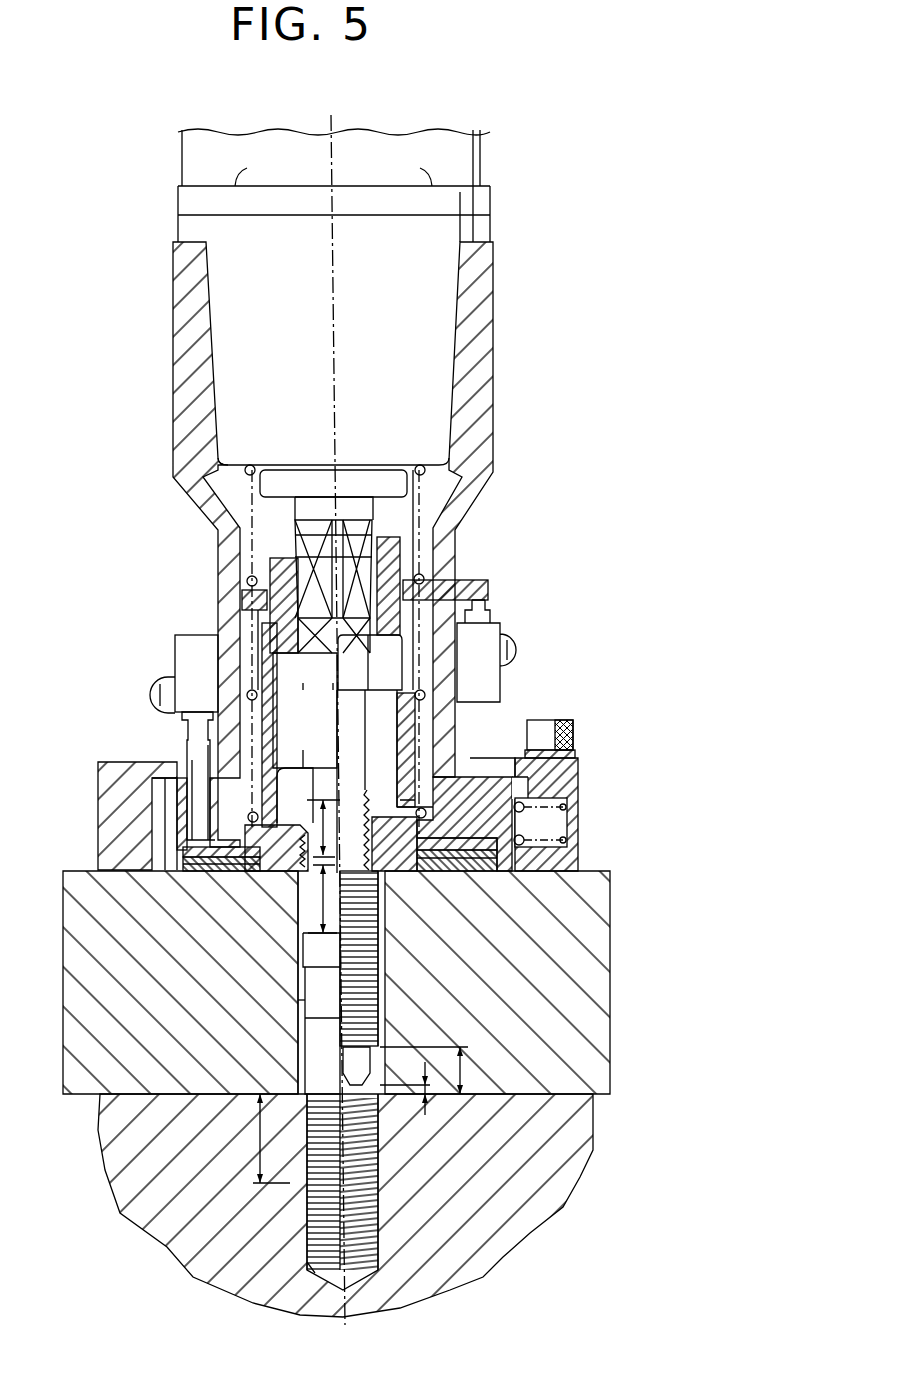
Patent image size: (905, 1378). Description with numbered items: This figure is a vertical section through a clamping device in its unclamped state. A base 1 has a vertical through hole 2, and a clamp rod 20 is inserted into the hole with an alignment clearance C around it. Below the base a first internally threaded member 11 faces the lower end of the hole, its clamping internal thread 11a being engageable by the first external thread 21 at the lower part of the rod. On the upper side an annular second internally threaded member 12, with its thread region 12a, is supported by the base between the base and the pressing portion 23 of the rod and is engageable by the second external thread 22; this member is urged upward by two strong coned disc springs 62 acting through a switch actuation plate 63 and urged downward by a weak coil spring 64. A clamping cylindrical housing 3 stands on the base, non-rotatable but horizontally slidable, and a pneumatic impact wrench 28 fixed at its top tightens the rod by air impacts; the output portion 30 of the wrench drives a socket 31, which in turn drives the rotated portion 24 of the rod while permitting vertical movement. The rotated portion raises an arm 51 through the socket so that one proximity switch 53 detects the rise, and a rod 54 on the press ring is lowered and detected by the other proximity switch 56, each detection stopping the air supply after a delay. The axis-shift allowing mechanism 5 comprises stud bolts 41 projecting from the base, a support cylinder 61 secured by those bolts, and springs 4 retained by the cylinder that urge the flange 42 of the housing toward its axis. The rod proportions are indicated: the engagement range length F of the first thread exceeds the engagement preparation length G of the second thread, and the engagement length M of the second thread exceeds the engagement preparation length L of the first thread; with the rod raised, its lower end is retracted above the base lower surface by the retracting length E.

The base 1 is at (585, 952).
The through hole 2 is at (380, 973).
The clamping cylindrical housing 3 is at (496, 449).
The springs 4 is at (567, 845).
The axis-shift allowing mechanism 5 is at (538, 762).
The first internally threaded member 11 is at (545, 1182).
The clamping internal thread 11a is at (375, 1203).
The second internally threaded member 12 is at (400, 848).
The thread portion 12a is at (378, 923).
The clamp rod 20 is at (297, 987).
The first external thread 21 is at (378, 1025).
The second external thread 22 is at (367, 790).
The pressing portion 23 is at (270, 850).
The rotated portion 24 is at (390, 648).
The pneumatic impact wrench 28 is at (488, 150).
The output portion 30 is at (303, 575).
The socket 31 is at (255, 596).
The stud bolts 41 is at (560, 720).
The flange 42 is at (480, 790).
The arm 51 is at (463, 585).
The proximity switch 53 is at (492, 628).
The rod 54 is at (190, 760).
The proximity switch 56 is at (190, 635).
The support cylinder 61 is at (580, 775).
The coned disc springs 62 is at (478, 870).
The switch actuation plate 63 is at (180, 847).
The coil spring 64 is at (255, 693).
The engagement length M is at (313, 803).
The engagement preparation length G is at (320, 895).
The alignment clearance C is at (305, 1003).
The engagement preparation length L is at (462, 1068).
The retracting length E is at (416, 1103).
The engagement range length F is at (269, 1138).